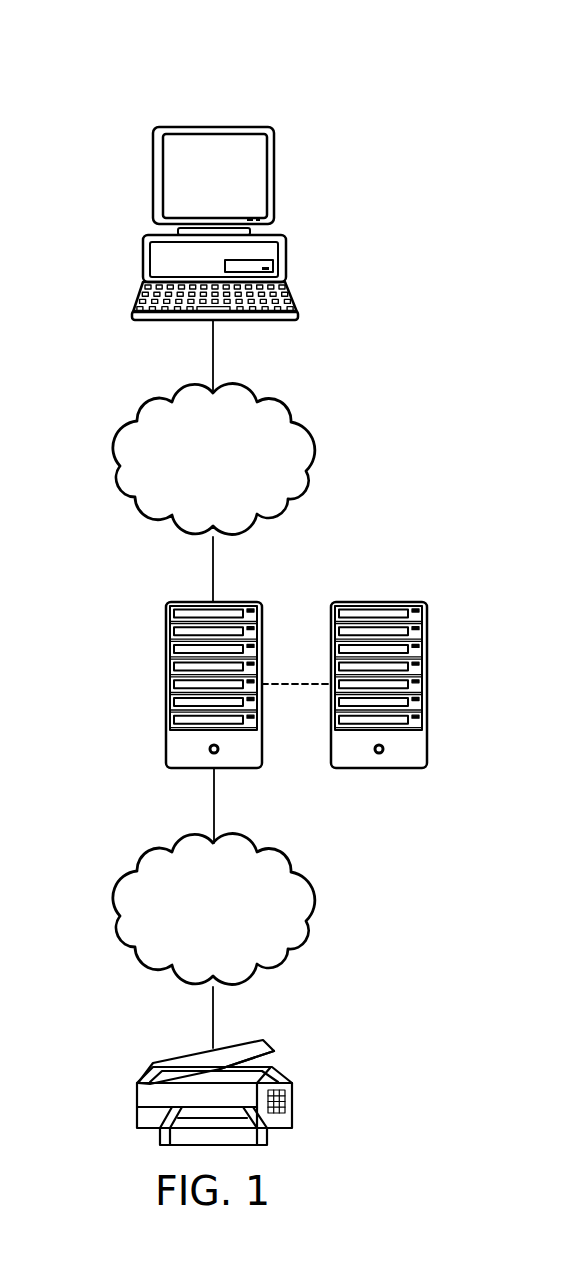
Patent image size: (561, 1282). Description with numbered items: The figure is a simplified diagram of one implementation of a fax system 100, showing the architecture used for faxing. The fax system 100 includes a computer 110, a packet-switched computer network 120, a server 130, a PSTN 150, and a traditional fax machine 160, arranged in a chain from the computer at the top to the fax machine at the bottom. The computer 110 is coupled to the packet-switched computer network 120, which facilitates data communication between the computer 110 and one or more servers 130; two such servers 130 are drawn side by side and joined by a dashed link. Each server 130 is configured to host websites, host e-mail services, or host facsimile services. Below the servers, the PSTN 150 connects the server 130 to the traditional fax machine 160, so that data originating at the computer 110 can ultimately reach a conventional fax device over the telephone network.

The fax system 100 is at (75, 61).
The computer 110 is at (153, 177).
The packet-switched computer network 120 is at (118, 461).
The server 130 is at (166, 690).
The PSTN 150 is at (119, 912).
The traditional fax machine 160 is at (137, 1121).